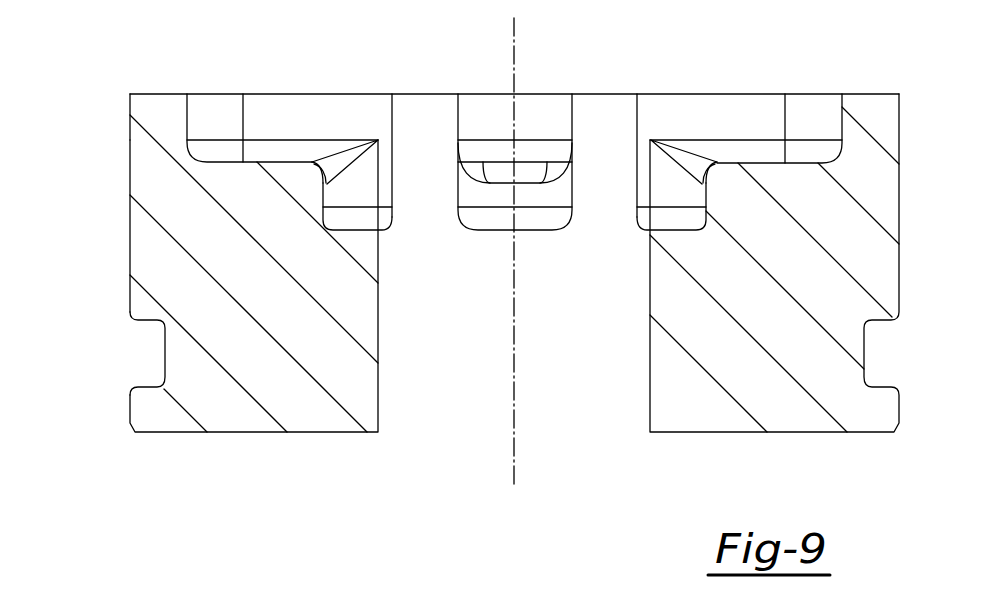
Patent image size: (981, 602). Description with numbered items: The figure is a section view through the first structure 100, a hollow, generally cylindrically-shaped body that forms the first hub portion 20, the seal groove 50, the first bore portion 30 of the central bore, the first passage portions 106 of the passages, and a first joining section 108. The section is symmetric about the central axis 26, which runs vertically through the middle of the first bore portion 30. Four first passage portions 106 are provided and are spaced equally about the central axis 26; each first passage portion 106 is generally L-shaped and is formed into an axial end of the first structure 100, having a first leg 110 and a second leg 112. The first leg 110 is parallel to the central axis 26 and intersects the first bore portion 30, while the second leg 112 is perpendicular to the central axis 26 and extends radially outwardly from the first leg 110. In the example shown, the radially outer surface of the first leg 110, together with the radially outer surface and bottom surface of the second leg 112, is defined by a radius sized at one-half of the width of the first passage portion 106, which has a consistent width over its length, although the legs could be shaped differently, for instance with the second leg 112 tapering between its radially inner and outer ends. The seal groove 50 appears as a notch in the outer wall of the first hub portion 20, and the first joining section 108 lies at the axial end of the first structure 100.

The first hub portion 20 is at (275, 373).
The central axis 26 is at (514, 460).
The first bore portion 30 is at (433, 398).
The seal groove 50 is at (155, 353).
The first structure 100 is at (762, 375).
The first passage portion 106 is at (718, 118).
The first joining section 108 is at (130, 135).
The first leg 110 is at (323, 198).
The second leg 112 is at (214, 152).